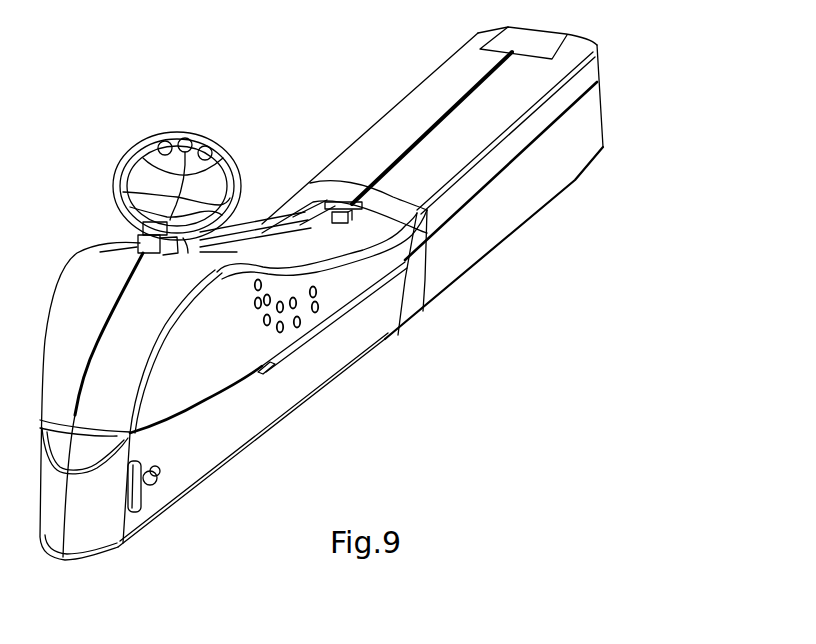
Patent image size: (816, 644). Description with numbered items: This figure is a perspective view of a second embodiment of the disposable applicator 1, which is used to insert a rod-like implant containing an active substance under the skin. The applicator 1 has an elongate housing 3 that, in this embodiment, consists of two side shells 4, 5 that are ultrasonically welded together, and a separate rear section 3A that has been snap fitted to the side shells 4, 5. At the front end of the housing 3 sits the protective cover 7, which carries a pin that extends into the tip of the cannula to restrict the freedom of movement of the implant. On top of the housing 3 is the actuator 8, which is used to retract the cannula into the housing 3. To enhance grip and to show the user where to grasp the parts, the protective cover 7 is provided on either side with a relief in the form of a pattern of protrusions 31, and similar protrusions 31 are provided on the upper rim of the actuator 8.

The applicator 1 is at (291, 148).
The housing 3 is at (466, 249).
The rear section 3A is at (532, 190).
The side shell 4 is at (383, 132).
The side shell 5 is at (433, 177).
The protective cover 7 is at (267, 418).
The actuator 8 is at (142, 177).
The protrusions 31 is at (184, 143).